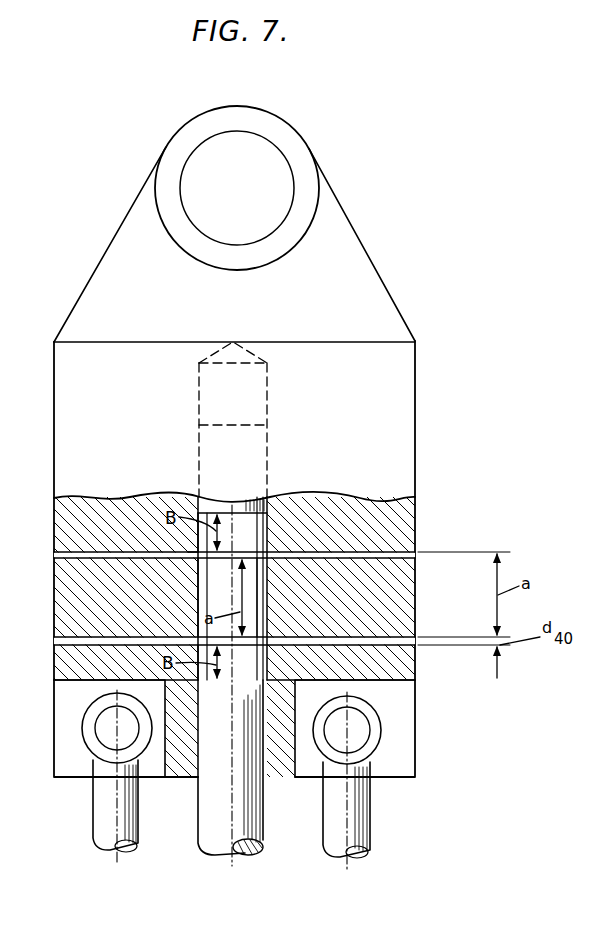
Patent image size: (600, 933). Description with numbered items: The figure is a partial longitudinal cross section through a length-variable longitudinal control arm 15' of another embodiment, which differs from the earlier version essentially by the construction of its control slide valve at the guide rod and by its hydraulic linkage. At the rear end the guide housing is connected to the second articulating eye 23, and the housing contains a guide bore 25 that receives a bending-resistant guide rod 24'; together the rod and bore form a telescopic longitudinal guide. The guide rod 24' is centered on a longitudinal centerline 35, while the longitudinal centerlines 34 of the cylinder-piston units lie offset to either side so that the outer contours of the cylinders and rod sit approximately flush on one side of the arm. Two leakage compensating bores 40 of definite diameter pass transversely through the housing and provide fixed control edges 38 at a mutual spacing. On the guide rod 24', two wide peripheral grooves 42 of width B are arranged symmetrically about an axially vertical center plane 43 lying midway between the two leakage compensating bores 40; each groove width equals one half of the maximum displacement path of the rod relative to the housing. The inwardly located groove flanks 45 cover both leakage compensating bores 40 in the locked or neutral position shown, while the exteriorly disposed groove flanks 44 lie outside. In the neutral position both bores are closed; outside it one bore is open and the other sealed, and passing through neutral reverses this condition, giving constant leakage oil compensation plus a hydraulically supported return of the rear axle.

The longitudinal control arm 15' is at (267, 462).
The second articulating eye 23 is at (303, 163).
The guide bore 25 is at (268, 451).
The leakage compensating bores 40 is at (108, 632).
The longitudinal centerline of the guide rod 35 is at (222, 802).
The guide rod 24' is at (270, 850).
The peripheral grooves 42 is at (248, 530).
The exteriorly disposed groove flanks 44 is at (198, 520).
The fixed control edges 38 is at (186, 545).
The axially vertical center plane 43 is at (207, 598).
The inwardly located groove flanks 45 is at (248, 638).
The longitudinal centerlines of the cylinder-piston units 34 is at (117, 795).